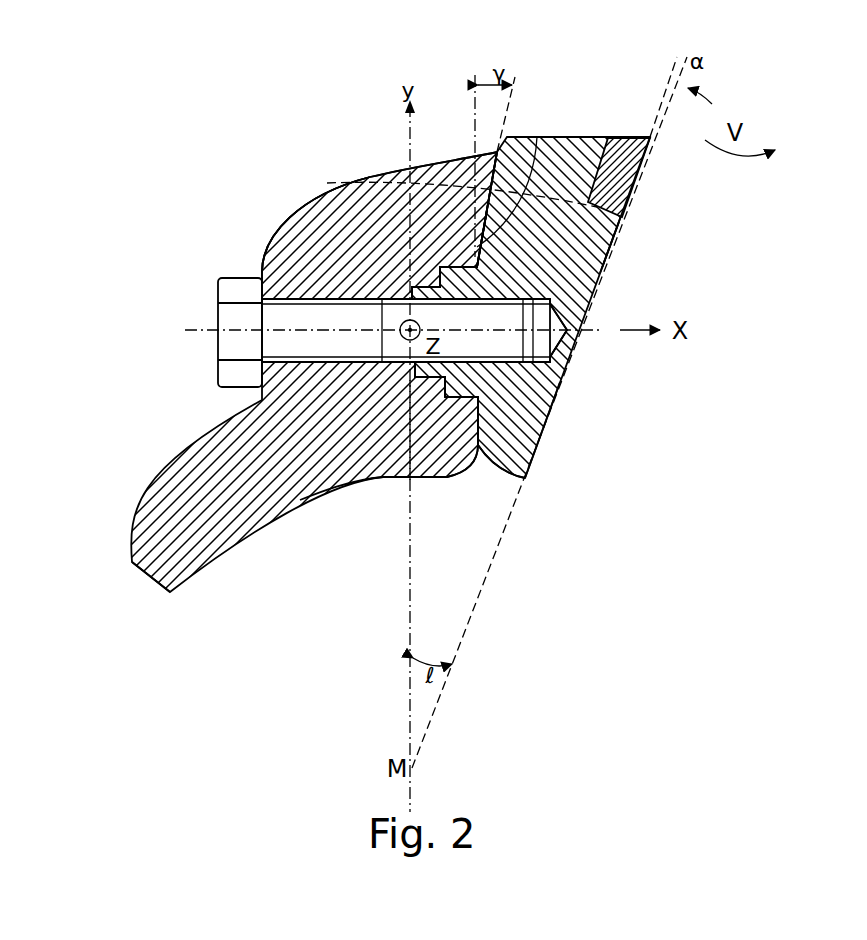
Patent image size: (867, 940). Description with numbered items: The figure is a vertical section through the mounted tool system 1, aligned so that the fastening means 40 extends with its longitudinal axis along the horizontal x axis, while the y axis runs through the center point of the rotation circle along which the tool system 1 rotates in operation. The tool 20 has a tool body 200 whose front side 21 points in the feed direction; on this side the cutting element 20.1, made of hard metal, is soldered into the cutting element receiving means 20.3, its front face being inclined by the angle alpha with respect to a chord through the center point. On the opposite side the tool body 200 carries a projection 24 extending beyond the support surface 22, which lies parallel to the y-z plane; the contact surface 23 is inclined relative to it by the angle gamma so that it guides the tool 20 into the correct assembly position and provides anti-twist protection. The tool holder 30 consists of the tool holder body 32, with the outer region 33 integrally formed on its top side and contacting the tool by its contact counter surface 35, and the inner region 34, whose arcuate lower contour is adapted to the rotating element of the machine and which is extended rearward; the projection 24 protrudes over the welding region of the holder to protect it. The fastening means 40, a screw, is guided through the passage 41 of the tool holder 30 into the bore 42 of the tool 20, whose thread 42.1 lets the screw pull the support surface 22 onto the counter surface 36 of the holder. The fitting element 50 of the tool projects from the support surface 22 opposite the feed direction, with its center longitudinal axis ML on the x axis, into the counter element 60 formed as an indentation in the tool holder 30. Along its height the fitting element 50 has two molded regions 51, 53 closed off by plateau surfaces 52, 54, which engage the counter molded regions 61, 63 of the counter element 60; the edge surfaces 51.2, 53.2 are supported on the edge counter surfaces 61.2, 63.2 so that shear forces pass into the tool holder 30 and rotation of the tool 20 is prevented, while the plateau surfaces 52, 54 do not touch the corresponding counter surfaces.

The tool system 1 is at (290, 645).
The tool 20 is at (649, 398).
The cutting element 20.1 is at (625, 172).
The cutting element receiving means 20.3 is at (674, 83).
The tool body 200 is at (580, 230).
The front side 21 is at (604, 268).
The support surface 22 is at (537, 140).
The contact surface 23 is at (521, 137).
The projection 24 is at (545, 437).
The tool holder 30 is at (148, 450).
The tool holder body 32 is at (350, 252).
The outer region 33 is at (297, 222).
The inner region 34 is at (193, 547).
The contact counter surface 35 is at (495, 166).
The counter surface 36 is at (510, 490).
The fastening means 40 is at (233, 315).
The passage 41 is at (280, 292).
The bore 42 is at (547, 350).
The thread 42.1 is at (557, 388).
The fitting element 50 is at (528, 476).
The molded region 51 is at (455, 400).
The edge surface 51.2 is at (478, 445).
The plateau surface 52 is at (412, 490).
The molded region 53 is at (420, 400).
The edge surface 53.2 is at (416, 380).
The plateau surface 54 is at (352, 483).
The counter element 60 is at (470, 262).
The counter molded region 61 is at (457, 255).
The edge counter surface 61.2 is at (466, 257).
The counter molded region 63 is at (417, 293).
The edge counter surface 63.2 is at (405, 262).
The center longitudinal axis ML is at (228, 348).